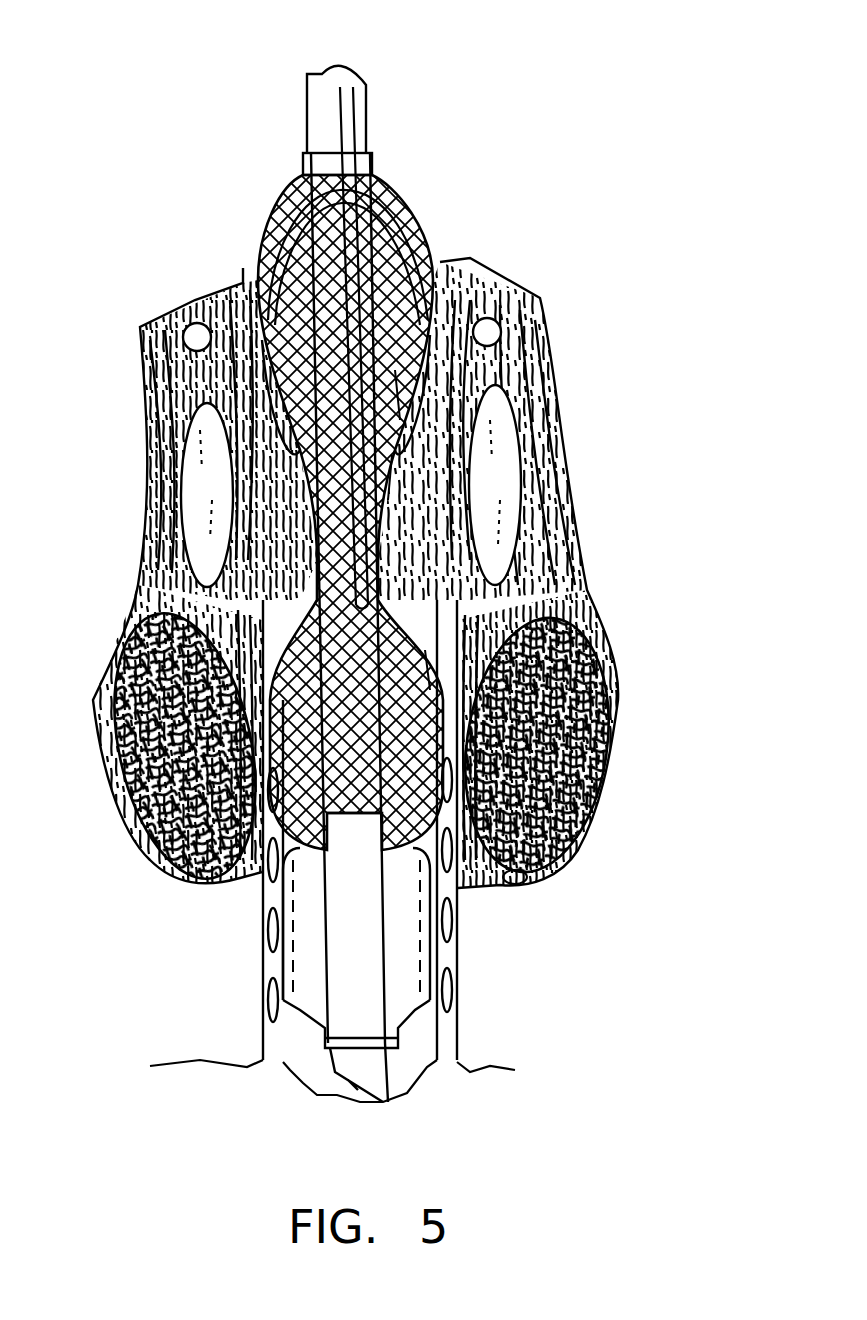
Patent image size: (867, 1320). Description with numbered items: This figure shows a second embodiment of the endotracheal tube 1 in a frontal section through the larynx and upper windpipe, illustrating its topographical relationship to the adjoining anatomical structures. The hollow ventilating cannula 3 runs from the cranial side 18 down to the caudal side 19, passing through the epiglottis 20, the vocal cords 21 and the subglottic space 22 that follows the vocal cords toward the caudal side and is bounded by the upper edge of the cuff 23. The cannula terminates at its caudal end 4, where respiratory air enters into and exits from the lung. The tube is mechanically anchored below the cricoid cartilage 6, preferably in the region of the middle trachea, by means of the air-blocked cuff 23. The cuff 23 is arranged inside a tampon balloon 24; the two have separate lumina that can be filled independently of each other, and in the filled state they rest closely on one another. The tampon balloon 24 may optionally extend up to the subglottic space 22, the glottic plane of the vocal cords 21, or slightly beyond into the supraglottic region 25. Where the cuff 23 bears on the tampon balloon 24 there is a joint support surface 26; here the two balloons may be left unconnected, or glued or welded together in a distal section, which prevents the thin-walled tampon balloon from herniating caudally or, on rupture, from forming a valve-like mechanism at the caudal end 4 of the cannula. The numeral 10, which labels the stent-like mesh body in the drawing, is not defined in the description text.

The endotracheal tube 1 is at (462, 85).
The ventilating cannula 3 is at (350, 102).
The caudal end 4 is at (363, 1103).
The cricoid cartilage 6 is at (258, 635).
The stent 10 is at (270, 225).
The cranial side 18 is at (322, 118).
The caudal side 19 is at (356, 948).
The epiglottis 20 is at (395, 210).
The vocal cords 21 is at (405, 478).
The subglottic space 22 is at (418, 667).
The cuff 23 is at (403, 908).
The tampon balloon 24 is at (417, 638).
The supraglottic region 25 is at (408, 395).
The support surface 26 is at (450, 903).